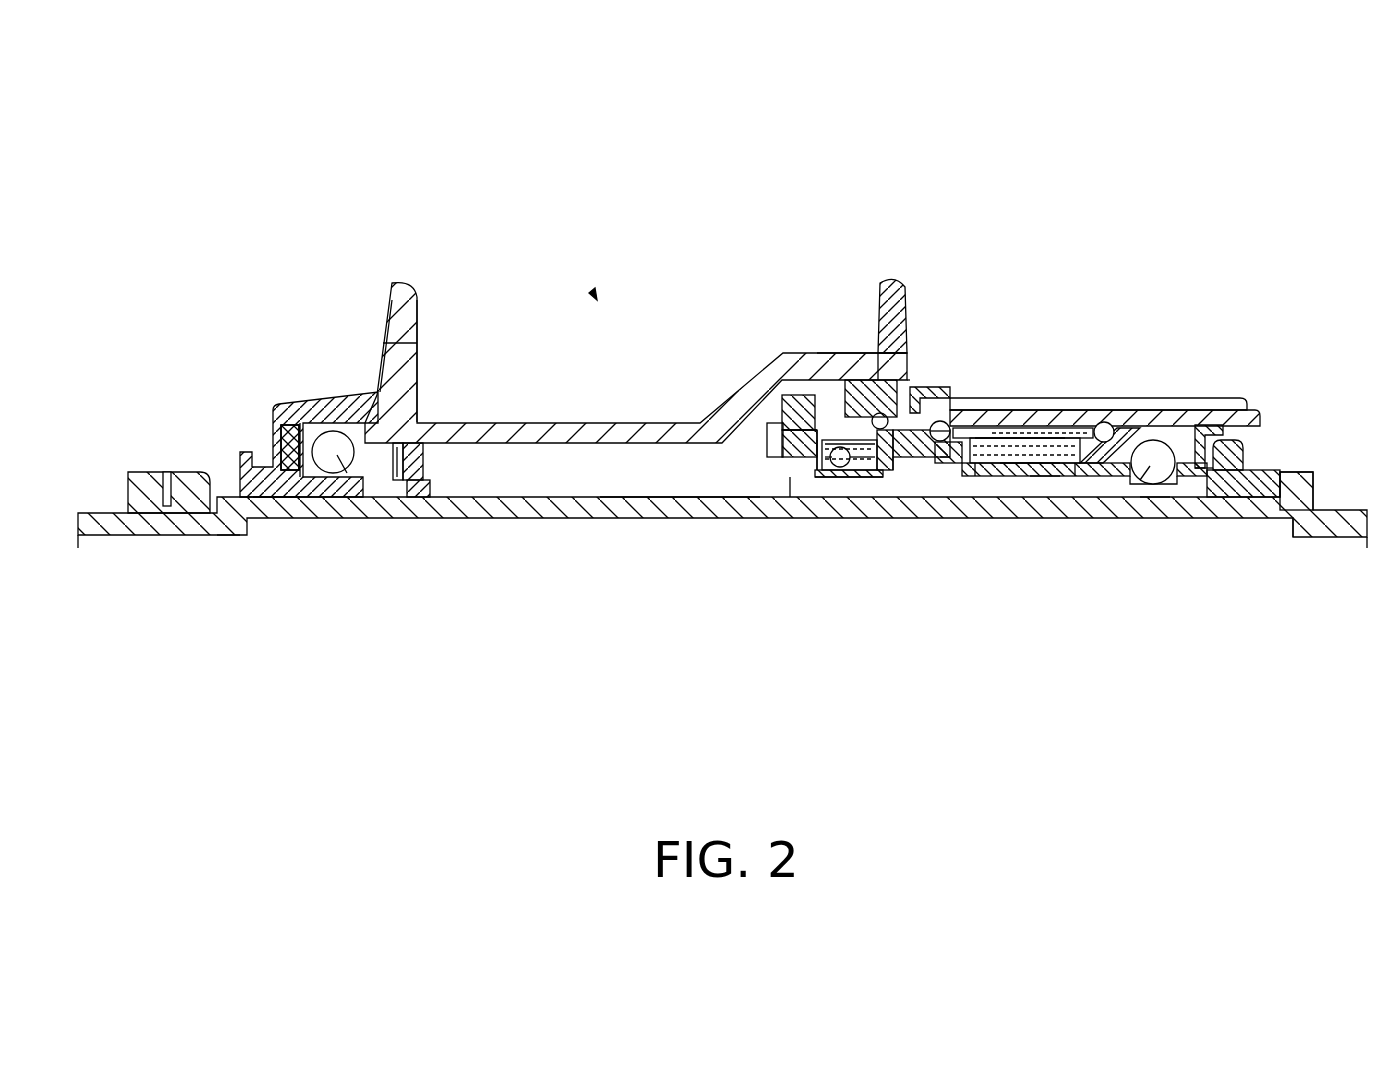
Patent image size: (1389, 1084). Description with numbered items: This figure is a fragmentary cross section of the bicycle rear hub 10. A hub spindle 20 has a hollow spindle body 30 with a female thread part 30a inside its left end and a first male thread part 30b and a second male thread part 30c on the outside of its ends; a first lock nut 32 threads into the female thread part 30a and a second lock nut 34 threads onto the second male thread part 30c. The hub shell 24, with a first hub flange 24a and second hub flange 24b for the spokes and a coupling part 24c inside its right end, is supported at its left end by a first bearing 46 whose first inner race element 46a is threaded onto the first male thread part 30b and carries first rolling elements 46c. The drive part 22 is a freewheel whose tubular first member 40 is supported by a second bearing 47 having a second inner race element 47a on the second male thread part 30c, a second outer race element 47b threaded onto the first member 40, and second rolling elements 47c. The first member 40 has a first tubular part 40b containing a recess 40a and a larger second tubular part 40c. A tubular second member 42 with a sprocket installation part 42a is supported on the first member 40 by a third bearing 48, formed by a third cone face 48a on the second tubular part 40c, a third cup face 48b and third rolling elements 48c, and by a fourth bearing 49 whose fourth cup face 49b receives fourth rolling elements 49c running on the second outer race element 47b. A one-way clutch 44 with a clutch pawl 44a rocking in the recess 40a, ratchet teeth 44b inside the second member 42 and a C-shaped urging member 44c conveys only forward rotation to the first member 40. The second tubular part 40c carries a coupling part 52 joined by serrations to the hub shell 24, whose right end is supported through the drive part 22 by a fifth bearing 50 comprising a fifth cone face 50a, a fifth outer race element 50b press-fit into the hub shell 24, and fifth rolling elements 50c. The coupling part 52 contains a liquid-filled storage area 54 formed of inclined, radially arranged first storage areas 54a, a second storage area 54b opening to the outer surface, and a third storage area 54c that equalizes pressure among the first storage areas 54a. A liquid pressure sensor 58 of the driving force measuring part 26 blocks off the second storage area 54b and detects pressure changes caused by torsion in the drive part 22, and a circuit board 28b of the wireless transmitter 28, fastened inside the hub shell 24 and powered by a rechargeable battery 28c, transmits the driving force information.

The bicycle rear hub 10 is at (597, 300).
The hub spindle 20 is at (620, 485).
The drive part 22 is at (1040, 387).
The hub shell 24 is at (677, 417).
The first hub flange 24a is at (407, 283).
The second hub flange 24b is at (887, 290).
The coupling part 24c is at (827, 370).
The driving force measuring part 26 is at (772, 417).
The wireless transmitter 28 is at (448, 497).
The circuit board 28b is at (427, 483).
The rechargeable battery 28c is at (428, 475).
The spindle body 30 is at (690, 490).
The female thread part 30a is at (218, 538).
The first male thread part 30b is at (420, 495).
The second male thread part 30c is at (1155, 500).
The first lock nut 32 is at (152, 470).
The second lock nut 34 is at (1275, 470).
The first member 40 is at (1005, 478).
The recess 40a is at (1078, 463).
The first tubular part 40b is at (1043, 478).
The second tubular part 40c is at (898, 478).
The second member 42 is at (1117, 392).
The sprocket installation part 42a is at (1265, 470).
The one-way clutch 44 is at (1009, 430).
The clutch pawl 44a is at (1027, 383).
The ratchet teeth 44b is at (1027, 480).
The urging member 44c is at (990, 478).
The first bearing 46 is at (322, 412).
The first inner race element 46a is at (300, 498).
The first rolling elements 46c is at (357, 412).
The second bearing 47 is at (1245, 498).
The second inner race element 47a is at (1230, 498).
The second outer race element 47b is at (1102, 485).
The second rolling elements 47c is at (1120, 485).
The third bearing 48 is at (943, 420).
The third cone face 48a is at (942, 485).
The third cup face 48b is at (950, 415).
The third rolling elements 48c is at (928, 395).
The fourth bearing 49 is at (1153, 440).
The fourth cup face 49b is at (1112, 424).
The fourth rolling elements 49c is at (1140, 432).
The fifth bearing 50 is at (870, 405).
The fifth cone face 50a is at (907, 345).
The fifth outer race element 50b is at (840, 473).
The fifth rolling elements 50c is at (860, 473).
The coupling part 52 is at (813, 483).
The storage area 54 is at (562, 558).
The first storage areas 54a is at (810, 462).
The second storage area 54b is at (780, 448).
The third storage area 54c is at (817, 470).
The liquid pressure sensor 58 is at (817, 455).